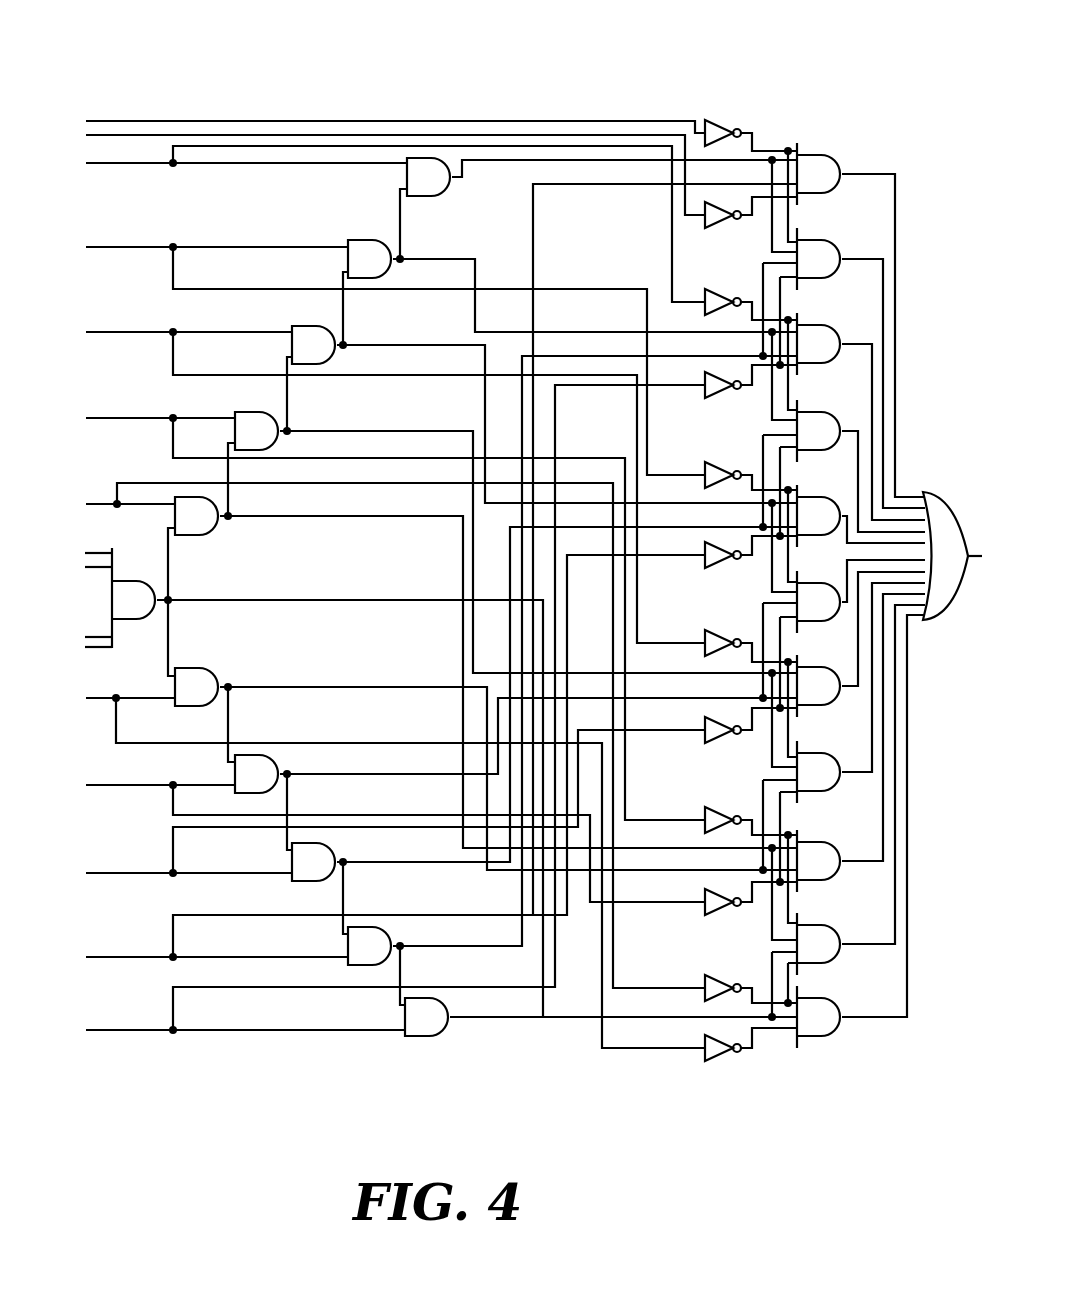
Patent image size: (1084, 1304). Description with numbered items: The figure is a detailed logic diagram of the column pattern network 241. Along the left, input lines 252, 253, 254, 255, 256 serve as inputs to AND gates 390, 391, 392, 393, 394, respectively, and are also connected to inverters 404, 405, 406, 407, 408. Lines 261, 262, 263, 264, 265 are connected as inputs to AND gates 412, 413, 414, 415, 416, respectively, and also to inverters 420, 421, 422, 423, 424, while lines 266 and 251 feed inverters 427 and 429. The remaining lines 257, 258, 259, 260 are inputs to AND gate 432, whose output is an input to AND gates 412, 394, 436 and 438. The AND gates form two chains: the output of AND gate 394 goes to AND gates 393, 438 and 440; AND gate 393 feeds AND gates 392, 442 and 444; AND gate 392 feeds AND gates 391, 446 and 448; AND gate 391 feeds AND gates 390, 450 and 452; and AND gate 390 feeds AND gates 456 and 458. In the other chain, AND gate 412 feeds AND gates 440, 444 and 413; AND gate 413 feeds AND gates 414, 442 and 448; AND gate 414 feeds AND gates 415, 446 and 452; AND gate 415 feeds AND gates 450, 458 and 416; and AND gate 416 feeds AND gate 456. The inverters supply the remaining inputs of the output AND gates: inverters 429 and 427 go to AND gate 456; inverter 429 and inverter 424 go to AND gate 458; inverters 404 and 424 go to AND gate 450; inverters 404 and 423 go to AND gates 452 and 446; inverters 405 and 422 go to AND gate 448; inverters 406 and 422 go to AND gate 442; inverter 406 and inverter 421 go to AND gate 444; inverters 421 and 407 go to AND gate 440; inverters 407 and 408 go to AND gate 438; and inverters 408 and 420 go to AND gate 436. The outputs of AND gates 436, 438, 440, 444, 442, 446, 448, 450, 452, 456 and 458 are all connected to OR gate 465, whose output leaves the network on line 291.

The column pattern network 241 is at (848, 62).
The line 251 is at (113, 123).
The line 266 is at (137, 138).
The line 252 is at (137, 167).
The line 253 is at (133, 246).
The line 254 is at (133, 332).
The line 255 is at (133, 413).
The line 256 is at (96, 504).
The line 257 is at (92, 553).
The line 258 is at (92, 567).
The line 259 is at (92, 637).
The line 260 is at (92, 647).
The line 261 is at (118, 696).
The line 262 is at (136, 782).
The line 263 is at (136, 872).
The line 264 is at (138, 956).
The line 265 is at (138, 1028).
The AND gate 390 is at (429, 189).
The AND gate 391 is at (370, 271).
The AND gate 392 is at (314, 357).
The AND gate 393 is at (257, 443).
The AND gate 394 is at (197, 528).
The AND gate 432 is at (134, 612).
The AND gate 412 is at (197, 699).
The AND gate 413 is at (257, 786).
The AND gate 414 is at (314, 874).
The AND gate 415 is at (370, 958).
The AND gate 416 is at (427, 1029).
The inverter 429 is at (722, 130).
The inverter 427 is at (722, 223).
The inverter 404 is at (722, 299).
The inverter 424 is at (722, 395).
The inverter 405 is at (722, 466).
The inverter 423 is at (722, 563).
The inverter 406 is at (722, 640).
The inverter 422 is at (722, 738).
The inverter 407 is at (722, 813).
The inverter 421 is at (722, 912).
The inverter 408 is at (722, 982).
The inverter 420 is at (722, 1058).
The AND gate 456 is at (838, 152).
The AND gate 458 is at (838, 237).
The AND gate 450 is at (838, 324).
The AND gate 452 is at (838, 409).
The AND gate 446 is at (835, 492).
The AND gate 448 is at (830, 576).
The AND gate 442 is at (838, 659).
The AND gate 444 is at (840, 752).
The AND gate 440 is at (840, 837).
The AND gate 438 is at (841, 922).
The AND gate 436 is at (848, 997).
The OR gate 465 is at (968, 548).
The line 291 is at (974, 568).